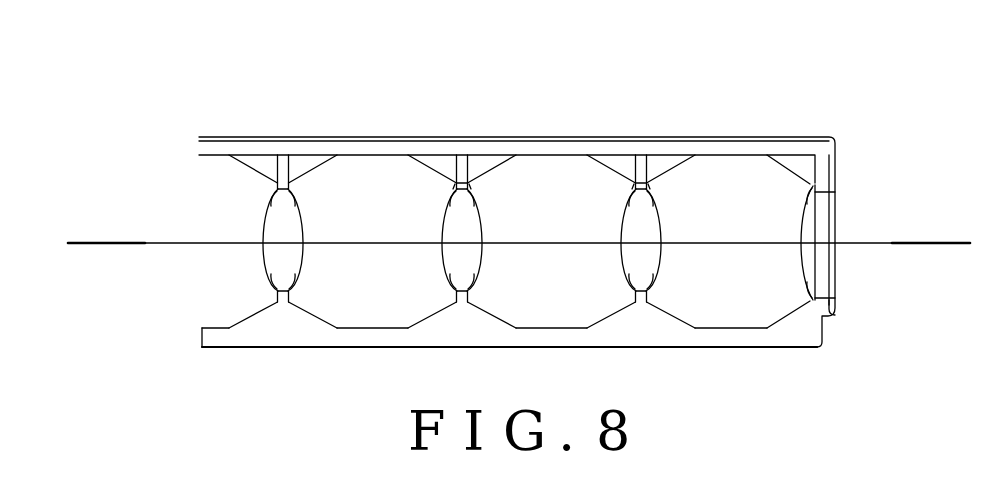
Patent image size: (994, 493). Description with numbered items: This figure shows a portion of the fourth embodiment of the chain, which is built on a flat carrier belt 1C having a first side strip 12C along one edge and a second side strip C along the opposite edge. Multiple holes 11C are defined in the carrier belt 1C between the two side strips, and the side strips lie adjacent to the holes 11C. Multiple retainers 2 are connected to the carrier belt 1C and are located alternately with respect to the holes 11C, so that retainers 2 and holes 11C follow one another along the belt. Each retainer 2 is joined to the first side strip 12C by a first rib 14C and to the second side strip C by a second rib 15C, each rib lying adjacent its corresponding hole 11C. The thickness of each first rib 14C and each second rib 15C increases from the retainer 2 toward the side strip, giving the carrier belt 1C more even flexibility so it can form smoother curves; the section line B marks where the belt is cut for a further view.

The retainer 2 is at (288, 221).
The flat carrier belt 1C is at (775, 57).
The hole 11C is at (563, 185).
The first side strip 12C is at (732, 150).
The first rib 14C is at (477, 167).
The second rib 15C is at (485, 315).
The bottom wall C is at (553, 337).
The section line B- B is at (118, 275).